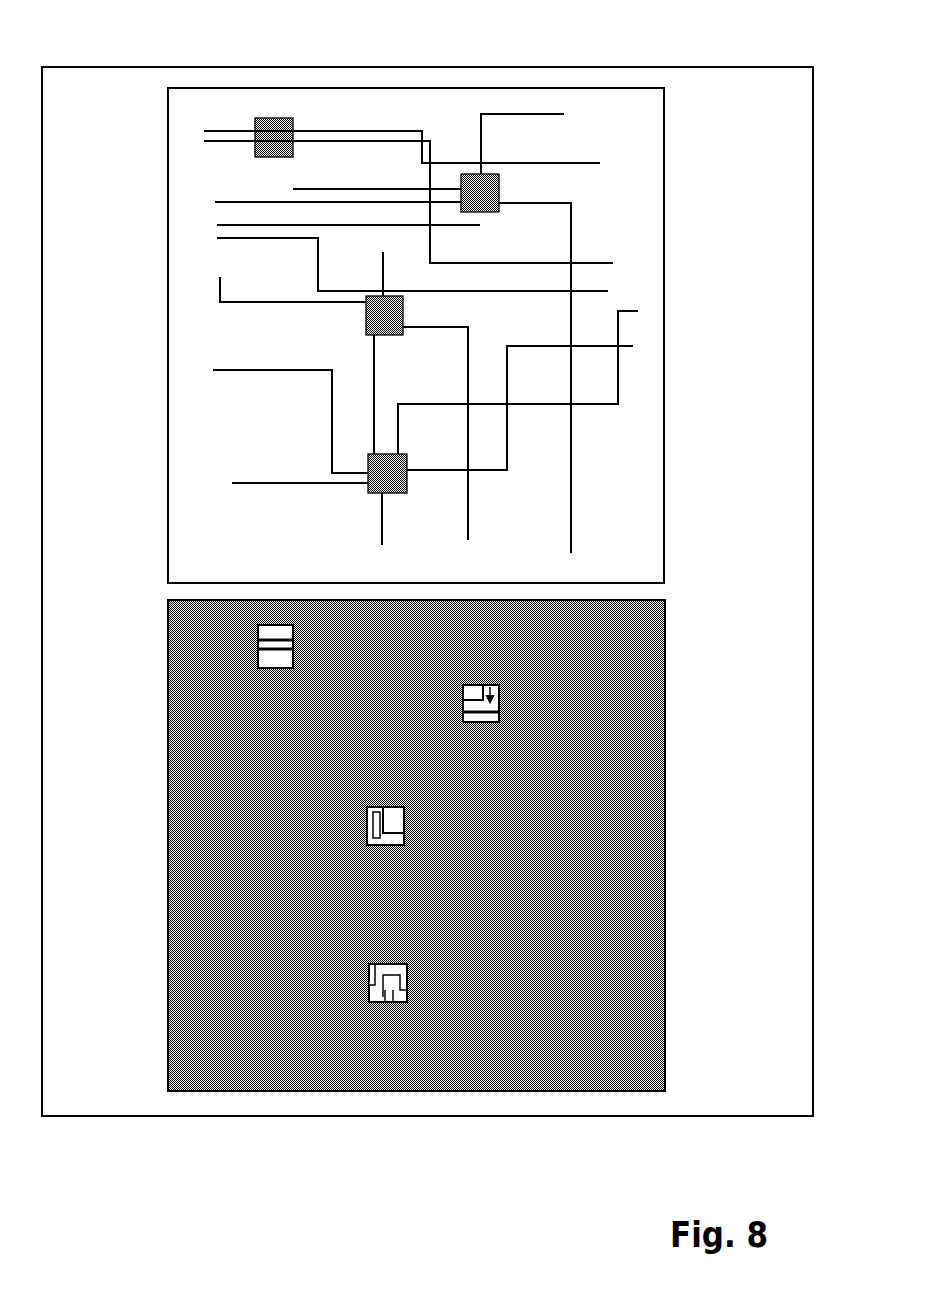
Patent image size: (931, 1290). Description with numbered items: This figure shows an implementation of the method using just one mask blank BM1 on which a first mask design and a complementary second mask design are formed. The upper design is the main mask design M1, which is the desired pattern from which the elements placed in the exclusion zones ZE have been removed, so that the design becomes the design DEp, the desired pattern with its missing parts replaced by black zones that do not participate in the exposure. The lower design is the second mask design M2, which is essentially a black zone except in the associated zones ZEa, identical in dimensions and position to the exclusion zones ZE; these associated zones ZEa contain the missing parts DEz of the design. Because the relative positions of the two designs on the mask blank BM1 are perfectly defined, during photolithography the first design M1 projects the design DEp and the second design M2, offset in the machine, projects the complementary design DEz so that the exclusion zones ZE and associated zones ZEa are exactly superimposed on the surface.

The mask blank BM1 is at (127, 65).
The main mask design M1 is at (665, 267).
The second mask design M2 is at (665, 677).
The exclusion zone ZE is at (397, 296).
The design with missing parts replaced by black zones DEp is at (612, 178).
The associated zone ZEa is at (397, 807).
The missing parts of the design DEz is at (490, 685).